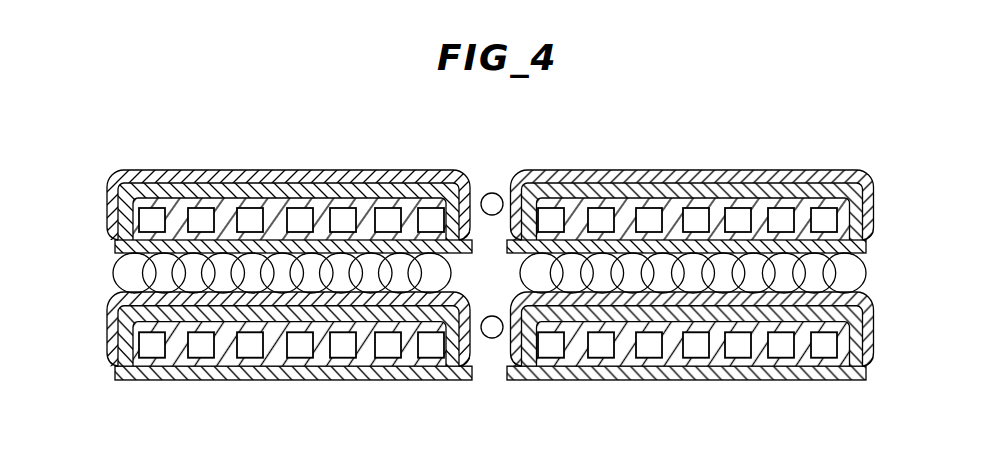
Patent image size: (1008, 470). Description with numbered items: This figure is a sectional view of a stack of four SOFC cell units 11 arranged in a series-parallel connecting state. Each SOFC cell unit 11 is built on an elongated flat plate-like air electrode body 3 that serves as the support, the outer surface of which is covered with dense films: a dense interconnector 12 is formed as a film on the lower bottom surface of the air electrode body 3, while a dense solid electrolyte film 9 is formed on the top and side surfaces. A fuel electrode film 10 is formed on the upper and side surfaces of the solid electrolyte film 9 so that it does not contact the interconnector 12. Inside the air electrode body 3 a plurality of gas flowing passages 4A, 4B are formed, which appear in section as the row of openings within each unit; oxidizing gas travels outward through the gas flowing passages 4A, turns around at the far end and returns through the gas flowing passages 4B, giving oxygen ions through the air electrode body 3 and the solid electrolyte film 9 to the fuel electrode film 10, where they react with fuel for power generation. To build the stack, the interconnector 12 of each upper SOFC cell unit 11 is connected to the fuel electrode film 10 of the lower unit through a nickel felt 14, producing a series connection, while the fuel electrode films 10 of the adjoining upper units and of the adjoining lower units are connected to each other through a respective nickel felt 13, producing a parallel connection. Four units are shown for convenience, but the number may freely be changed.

The SOFC cell unit 11 is at (489, 201).
The fuel electrode film 10 is at (369, 179).
The dense solid electrolyte film 9 is at (405, 193).
The air electrode body 3 is at (423, 207).
The gas flowing passage 4A is at (548, 212).
The gas flowing passage 4B is at (594, 212).
The interconnector 12 is at (115, 247).
The nickel felt 13 is at (492, 216).
The nickel felt 14 is at (864, 279).